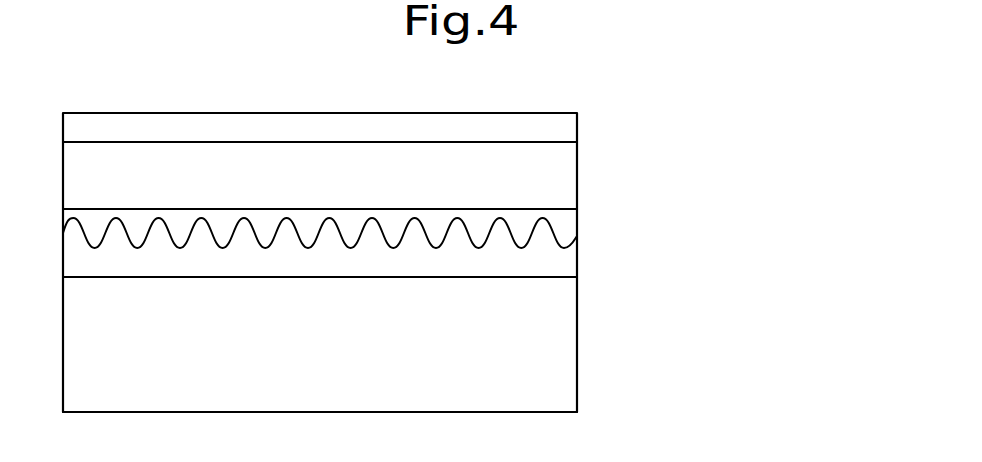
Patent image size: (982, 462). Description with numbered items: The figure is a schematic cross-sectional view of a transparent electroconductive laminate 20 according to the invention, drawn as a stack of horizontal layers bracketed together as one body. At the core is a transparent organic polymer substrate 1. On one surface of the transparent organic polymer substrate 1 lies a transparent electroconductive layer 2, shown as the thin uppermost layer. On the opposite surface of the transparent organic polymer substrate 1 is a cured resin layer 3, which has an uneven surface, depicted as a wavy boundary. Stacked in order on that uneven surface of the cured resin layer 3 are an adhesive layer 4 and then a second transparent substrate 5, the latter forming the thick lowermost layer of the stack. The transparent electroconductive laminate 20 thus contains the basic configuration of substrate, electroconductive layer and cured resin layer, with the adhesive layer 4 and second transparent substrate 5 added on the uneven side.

The transparent organic polymer substrate 1 is at (544, 197).
The transparent electroconductive layer 2 is at (535, 139).
The cured resin layer 3 is at (567, 220).
The adhesive layer 4 is at (539, 263).
The second transparent substrate 5 is at (557, 378).
The transparent electroconductive laminate 20 is at (740, 85).